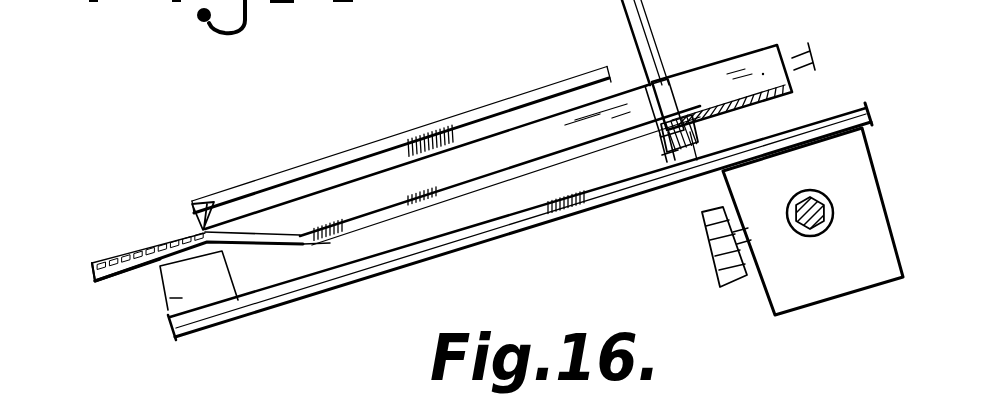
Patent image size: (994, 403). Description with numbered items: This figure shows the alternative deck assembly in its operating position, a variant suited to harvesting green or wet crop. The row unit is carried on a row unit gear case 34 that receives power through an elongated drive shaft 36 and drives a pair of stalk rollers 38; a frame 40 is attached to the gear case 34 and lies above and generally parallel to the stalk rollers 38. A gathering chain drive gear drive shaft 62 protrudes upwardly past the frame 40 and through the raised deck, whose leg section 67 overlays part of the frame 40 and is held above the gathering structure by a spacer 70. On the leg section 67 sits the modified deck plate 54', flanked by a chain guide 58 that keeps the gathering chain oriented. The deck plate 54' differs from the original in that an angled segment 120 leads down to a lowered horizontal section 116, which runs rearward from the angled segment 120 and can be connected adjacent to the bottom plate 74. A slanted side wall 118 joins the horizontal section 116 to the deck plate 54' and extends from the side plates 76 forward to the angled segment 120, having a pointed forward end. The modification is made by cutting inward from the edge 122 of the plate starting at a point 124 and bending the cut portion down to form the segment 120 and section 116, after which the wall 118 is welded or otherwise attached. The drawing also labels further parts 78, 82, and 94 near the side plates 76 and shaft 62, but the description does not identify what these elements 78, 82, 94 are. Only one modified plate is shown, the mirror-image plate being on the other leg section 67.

The row unit gear case 34 is at (799, 302).
The elongated drive shaft 36 is at (808, 195).
The stalk rollers 38 is at (703, 222).
The frame 40 is at (478, 238).
The deck plate 54' is at (197, 239).
The chain guide 58 is at (327, 158).
The gathering chain drive gear drive shaft 62 is at (694, 145).
The leg section 67 is at (120, 279).
The spacer 70 is at (168, 308).
The bottom plate 74 is at (750, 108).
The side plate 76 is at (722, 64).
The plunger 78 is at (650, 105).
The latch 82 is at (664, 156).
The actuating rod 94 is at (632, 27).
The lowered horizontal section 116 is at (347, 236).
The slanted side wall 118 is at (477, 157).
The angled segment 120 is at (287, 246).
The edge 122 is at (92, 277).
The point 124 is at (212, 198).